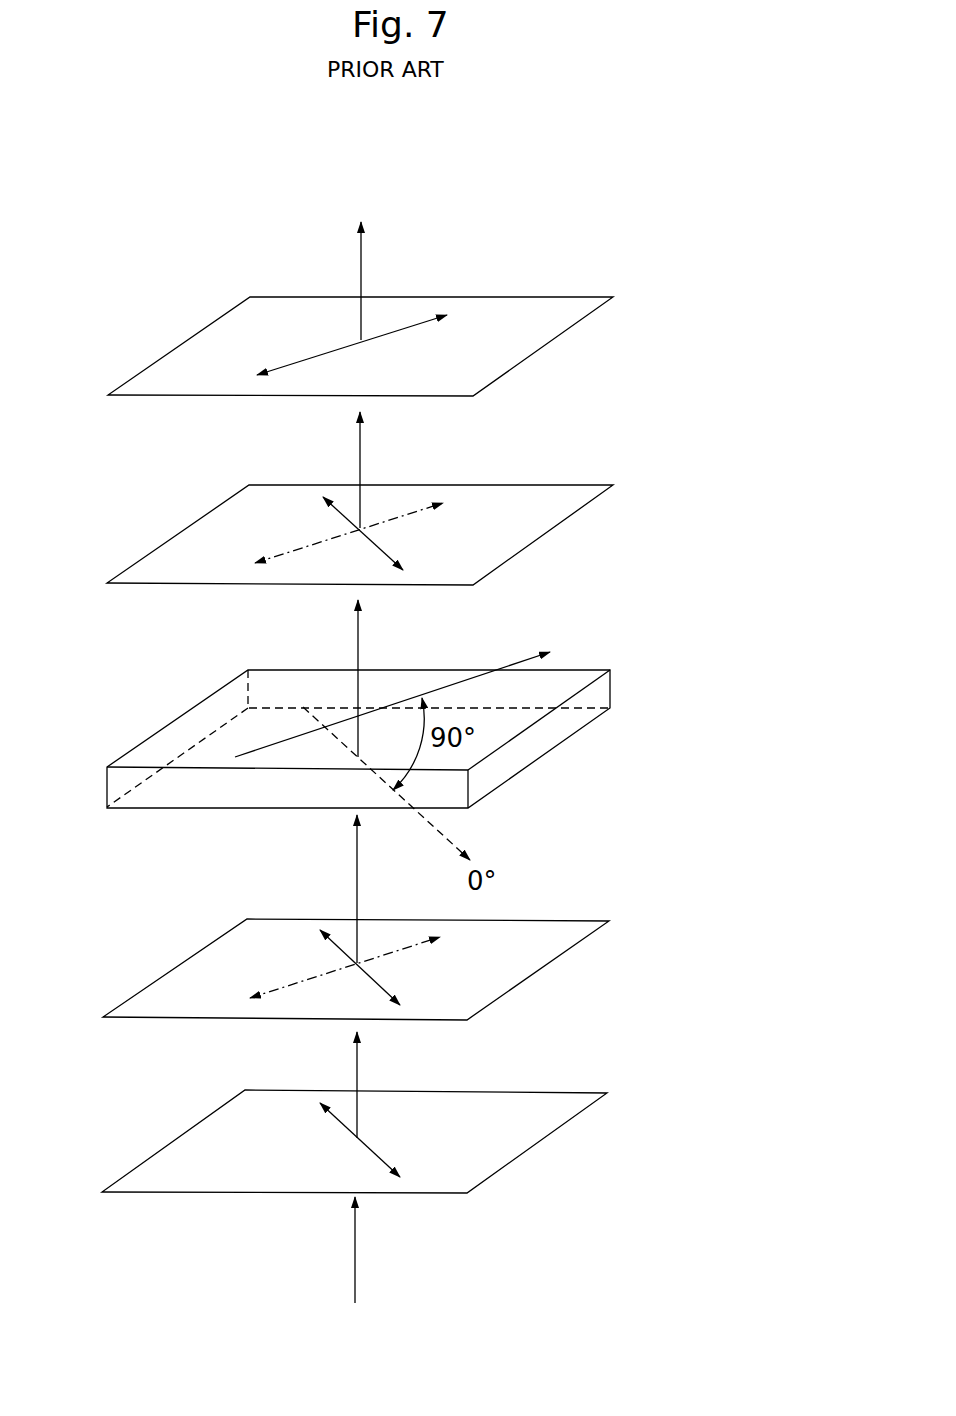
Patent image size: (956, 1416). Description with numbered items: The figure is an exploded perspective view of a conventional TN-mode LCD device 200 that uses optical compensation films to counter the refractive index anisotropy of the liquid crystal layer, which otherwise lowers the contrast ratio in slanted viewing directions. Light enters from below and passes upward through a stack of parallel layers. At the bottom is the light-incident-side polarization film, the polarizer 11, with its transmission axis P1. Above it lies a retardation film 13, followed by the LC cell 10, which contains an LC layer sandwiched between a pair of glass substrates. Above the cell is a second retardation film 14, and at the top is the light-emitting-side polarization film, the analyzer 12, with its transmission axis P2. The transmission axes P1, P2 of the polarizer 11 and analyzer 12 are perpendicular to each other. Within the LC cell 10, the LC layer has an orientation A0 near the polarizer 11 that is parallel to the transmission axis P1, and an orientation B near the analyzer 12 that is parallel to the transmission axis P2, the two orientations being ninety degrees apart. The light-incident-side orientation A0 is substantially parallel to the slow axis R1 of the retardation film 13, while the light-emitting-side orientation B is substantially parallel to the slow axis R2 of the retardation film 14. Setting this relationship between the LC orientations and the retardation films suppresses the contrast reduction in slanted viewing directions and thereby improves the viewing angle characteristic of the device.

The LCD device 200 is at (728, 156).
The LC cell 10 is at (168, 740).
The polarizer 11 is at (197, 1165).
The analyzer 12 is at (197, 363).
The retardation film 13 is at (187, 988).
The retardation film 14 is at (197, 545).
The transmission axis P1 is at (367, 1150).
The transmission axis P2 is at (408, 325).
The slow axis R1 is at (378, 978).
The slow axis R2 is at (377, 545).
The orientation B is at (420, 698).
The orientation A0 is at (438, 837).